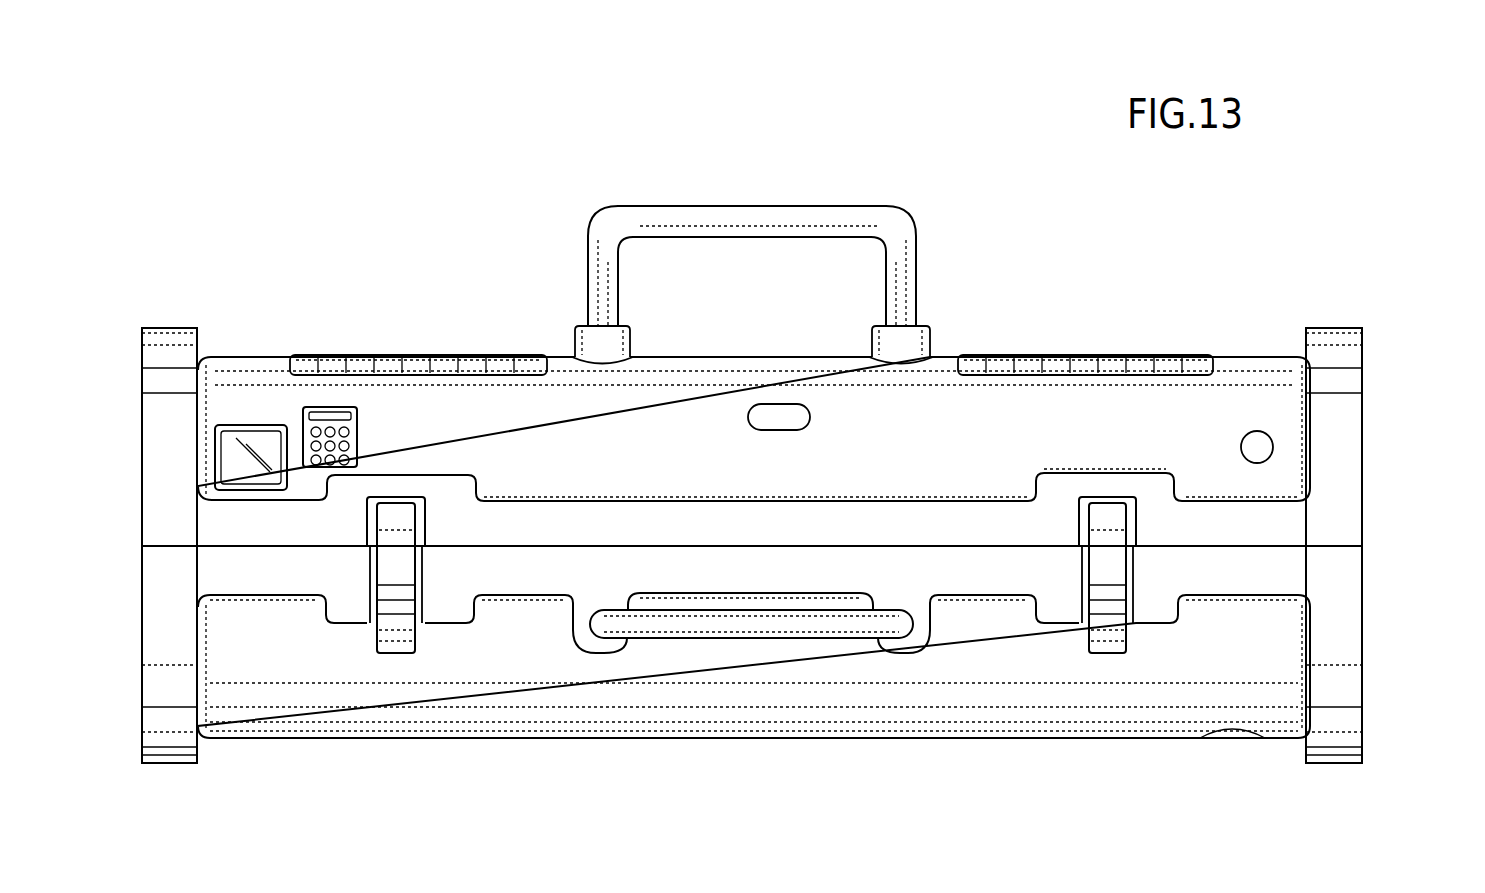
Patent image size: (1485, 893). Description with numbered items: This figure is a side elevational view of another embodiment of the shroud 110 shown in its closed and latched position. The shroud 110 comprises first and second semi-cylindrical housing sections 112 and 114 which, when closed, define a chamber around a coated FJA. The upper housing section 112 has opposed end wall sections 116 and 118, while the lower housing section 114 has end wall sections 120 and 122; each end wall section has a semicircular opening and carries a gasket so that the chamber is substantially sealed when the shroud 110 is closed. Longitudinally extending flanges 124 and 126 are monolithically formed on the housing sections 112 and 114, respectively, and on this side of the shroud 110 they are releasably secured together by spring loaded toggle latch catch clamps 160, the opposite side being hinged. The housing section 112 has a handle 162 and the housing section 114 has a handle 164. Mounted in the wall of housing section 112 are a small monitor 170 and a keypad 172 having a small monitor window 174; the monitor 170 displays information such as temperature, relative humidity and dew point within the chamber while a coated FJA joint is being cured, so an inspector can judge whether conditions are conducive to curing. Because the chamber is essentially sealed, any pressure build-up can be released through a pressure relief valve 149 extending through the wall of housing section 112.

The shroud 110 is at (1080, 297).
The first semi-cylindrical housing section 112 is at (660, 460).
The second semi-cylindrical housing section 114 is at (530, 672).
The end wall section 116 is at (1325, 413).
The end wall section 118 is at (158, 424).
The end wall section 120 is at (1340, 600).
The end wall section 122 is at (157, 603).
The longitudinally extending flange 124 is at (933, 518).
The longitudinally extending flange 126 is at (992, 572).
The pressure relief valve 149 is at (1258, 445).
The spring loaded toggle latch catch clamp 160 is at (388, 628).
The handle 162 is at (778, 215).
The handle 164 is at (778, 618).
The monitor 170 is at (265, 447).
The keypad 172 is at (352, 440).
The monitor window 174 is at (327, 410).